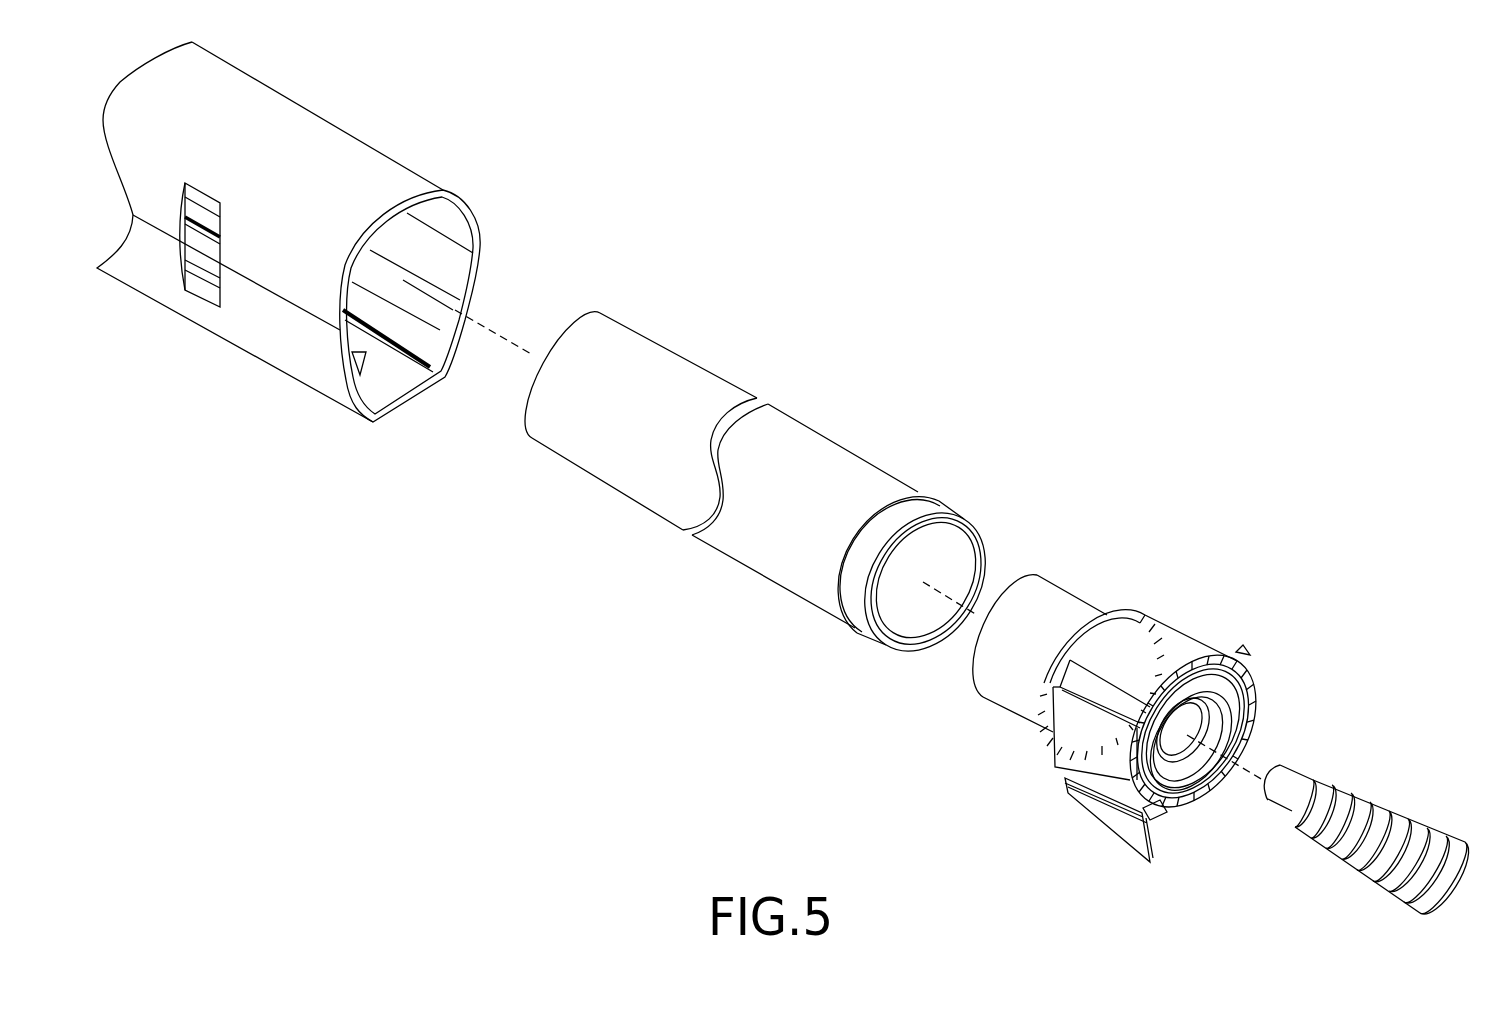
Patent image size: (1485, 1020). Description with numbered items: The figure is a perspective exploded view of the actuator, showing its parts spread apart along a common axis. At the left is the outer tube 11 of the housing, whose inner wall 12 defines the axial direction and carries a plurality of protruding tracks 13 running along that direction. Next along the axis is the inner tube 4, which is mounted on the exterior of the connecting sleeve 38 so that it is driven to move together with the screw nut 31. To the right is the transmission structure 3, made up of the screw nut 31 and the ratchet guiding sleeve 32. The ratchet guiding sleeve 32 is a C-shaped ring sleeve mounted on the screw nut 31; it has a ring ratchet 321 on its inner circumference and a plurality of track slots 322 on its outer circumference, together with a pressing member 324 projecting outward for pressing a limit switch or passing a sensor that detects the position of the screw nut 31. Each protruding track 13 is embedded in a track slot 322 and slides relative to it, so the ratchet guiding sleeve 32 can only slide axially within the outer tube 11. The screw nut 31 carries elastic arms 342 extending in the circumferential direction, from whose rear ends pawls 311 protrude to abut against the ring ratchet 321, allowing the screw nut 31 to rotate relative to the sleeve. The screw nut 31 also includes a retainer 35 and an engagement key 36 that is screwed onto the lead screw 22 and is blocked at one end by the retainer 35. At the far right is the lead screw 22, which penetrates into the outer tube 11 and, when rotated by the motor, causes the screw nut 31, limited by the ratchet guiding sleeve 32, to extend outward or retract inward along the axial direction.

The outer tube 11 is at (332, 130).
The inner wall 12 is at (458, 270).
The protruding tracks 13 is at (473, 232).
The inner tube 4 is at (807, 440).
The transmission structure 3 is at (1130, 565).
The screw nut 31 is at (997, 697).
The connecting sleeve 38 is at (1052, 595).
The ratchet guiding sleeve 32 is at (1174, 719).
The track slots 322 is at (1102, 695).
The pressing member 324 is at (1097, 818).
The elastic arms 342 is at (1207, 657).
The pawls 311 is at (1235, 652).
The ring ratchet 321 is at (1260, 687).
The engagement key 36 is at (1207, 698).
The retainer 35 is at (1223, 733).
The lead screw 22 is at (1407, 807).